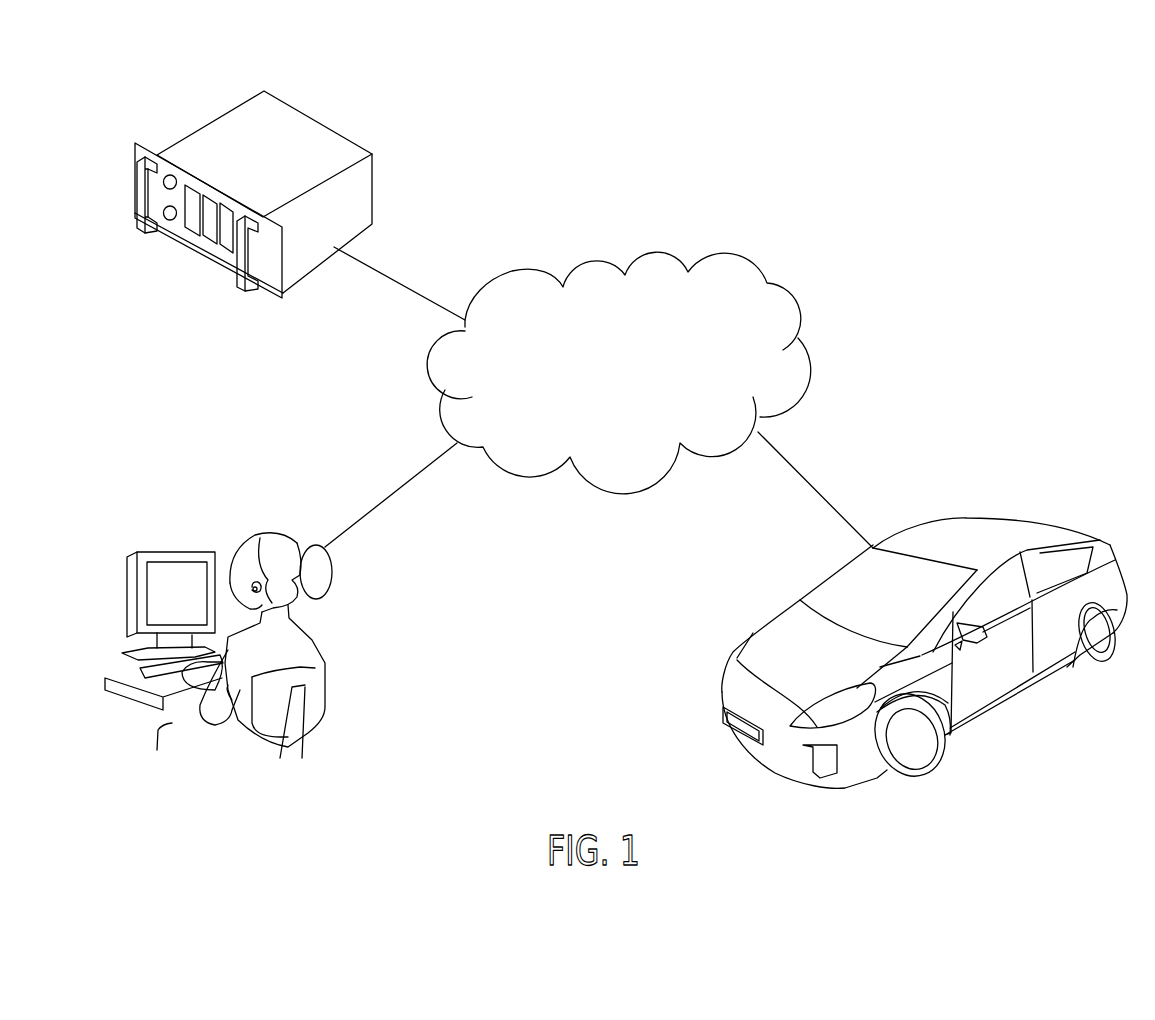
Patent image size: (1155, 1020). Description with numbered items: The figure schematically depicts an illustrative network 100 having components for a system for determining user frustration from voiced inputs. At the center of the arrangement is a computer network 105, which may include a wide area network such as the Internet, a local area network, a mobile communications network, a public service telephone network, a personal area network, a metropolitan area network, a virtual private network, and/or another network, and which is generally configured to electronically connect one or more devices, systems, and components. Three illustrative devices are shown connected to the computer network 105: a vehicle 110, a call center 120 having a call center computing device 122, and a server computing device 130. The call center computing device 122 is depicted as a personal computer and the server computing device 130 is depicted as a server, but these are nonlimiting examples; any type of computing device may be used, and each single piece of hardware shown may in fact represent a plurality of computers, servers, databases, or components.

The network 100 is at (915, 208).
The computer network 105 is at (800, 327).
The vehicle 110 is at (977, 513).
The call center 120 is at (318, 653).
The call center computing device 122 is at (173, 552).
The server computing device 130 is at (372, 187).